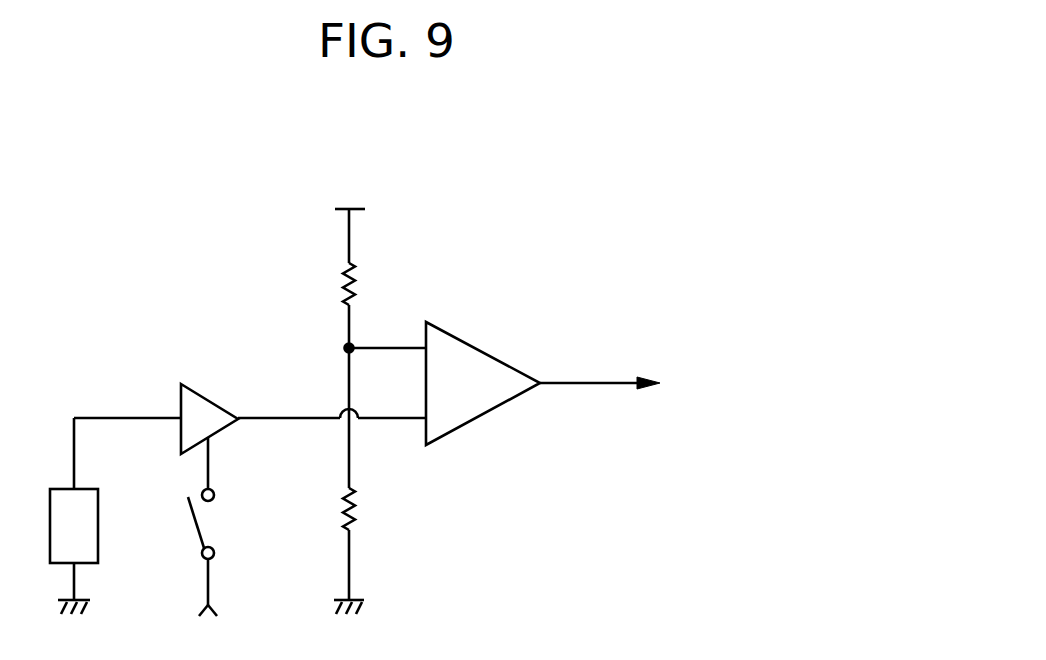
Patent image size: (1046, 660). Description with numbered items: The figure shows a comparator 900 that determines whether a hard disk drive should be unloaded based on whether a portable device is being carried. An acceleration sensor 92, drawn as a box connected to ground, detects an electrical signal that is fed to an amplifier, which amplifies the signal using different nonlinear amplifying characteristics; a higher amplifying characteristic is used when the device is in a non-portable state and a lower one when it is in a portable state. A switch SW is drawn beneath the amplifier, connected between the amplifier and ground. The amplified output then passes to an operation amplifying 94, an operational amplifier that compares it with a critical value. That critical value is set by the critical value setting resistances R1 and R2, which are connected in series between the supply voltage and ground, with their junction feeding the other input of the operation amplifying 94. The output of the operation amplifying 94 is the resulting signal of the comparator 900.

The comparator 900 is at (598, 197).
The acceleration sensor 92 is at (98, 527).
The operation amplifying 94 is at (483, 350).
The critical value setting resistance R1 is at (369, 285).
The critical value setting resistance R2 is at (369, 509).
The switch SW is at (225, 526).